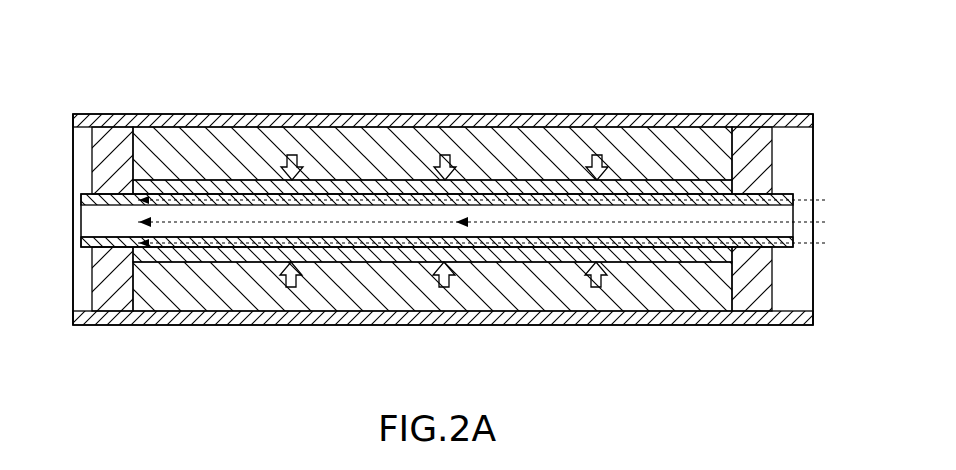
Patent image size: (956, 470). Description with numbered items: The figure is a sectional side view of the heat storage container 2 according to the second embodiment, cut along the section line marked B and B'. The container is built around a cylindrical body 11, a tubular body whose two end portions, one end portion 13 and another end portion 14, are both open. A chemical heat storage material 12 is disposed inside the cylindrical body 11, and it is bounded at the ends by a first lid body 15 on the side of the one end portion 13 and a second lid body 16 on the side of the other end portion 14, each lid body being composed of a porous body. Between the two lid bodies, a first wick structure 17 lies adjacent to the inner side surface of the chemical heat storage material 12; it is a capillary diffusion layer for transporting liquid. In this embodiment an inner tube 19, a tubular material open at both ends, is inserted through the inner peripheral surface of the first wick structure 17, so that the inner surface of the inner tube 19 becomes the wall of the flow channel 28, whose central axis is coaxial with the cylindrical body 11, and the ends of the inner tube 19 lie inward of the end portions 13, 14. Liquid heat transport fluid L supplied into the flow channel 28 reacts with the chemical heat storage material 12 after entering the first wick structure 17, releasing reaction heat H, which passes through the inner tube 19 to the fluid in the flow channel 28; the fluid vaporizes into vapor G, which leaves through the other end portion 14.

The heat storage container 2 is at (491, 113).
The cylindrical body 11 is at (717, 114).
The chemical heat storage material 12 is at (572, 160).
The one end portion 13 is at (813, 160).
The another end portion 14 is at (72, 152).
The first lid body 15 is at (757, 140).
The second lid body 16 is at (106, 138).
The first wick structure 17 is at (219, 180).
The inner tube 19 is at (793, 200).
The flow channel 28 is at (775, 212).
The liquid heat transport fluid L is at (538, 200).
The reaction heat H is at (292, 168).
The vapor of heat transport fluid G is at (357, 218).
The section line B is at (420, 77).
The section line B' is at (418, 370).